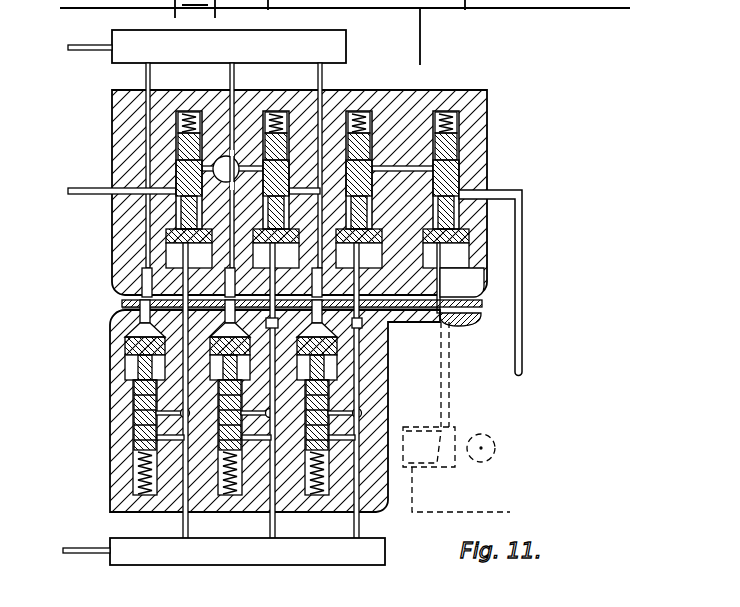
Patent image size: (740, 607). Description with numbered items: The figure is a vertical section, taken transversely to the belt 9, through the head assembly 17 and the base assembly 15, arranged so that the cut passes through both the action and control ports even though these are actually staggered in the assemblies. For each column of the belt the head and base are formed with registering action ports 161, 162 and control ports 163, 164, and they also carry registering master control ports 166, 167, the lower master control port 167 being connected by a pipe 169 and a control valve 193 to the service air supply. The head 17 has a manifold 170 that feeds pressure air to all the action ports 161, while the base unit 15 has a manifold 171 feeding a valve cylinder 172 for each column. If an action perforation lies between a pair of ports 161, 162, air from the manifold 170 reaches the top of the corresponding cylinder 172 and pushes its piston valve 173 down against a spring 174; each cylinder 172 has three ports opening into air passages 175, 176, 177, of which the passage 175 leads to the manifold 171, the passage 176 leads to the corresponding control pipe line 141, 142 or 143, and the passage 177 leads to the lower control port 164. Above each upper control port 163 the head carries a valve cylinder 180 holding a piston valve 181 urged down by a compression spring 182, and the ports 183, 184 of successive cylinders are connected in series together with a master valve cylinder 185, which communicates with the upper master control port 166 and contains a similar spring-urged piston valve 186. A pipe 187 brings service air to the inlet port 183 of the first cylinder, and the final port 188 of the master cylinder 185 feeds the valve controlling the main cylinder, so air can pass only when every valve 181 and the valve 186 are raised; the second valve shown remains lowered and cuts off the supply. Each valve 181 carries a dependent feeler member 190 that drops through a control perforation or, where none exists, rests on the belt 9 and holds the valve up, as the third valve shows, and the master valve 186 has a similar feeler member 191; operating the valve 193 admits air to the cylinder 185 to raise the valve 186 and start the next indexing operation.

The belt 9 is at (470, 302).
The base assembly 15 is at (113, 463).
The head assembly 17 is at (130, 235).
The control pipe line 141 is at (143, 432).
The control pipe line 142 is at (266, 513).
The control pipe line 143 is at (397, 310).
The action port 161 is at (140, 280).
The action port 162 is at (130, 330).
The control port 163 is at (143, 315).
The control port 164 is at (188, 323).
The master control port 166 is at (450, 280).
The master control port 167 is at (483, 322).
The pipe 169 is at (452, 343).
The manifold 170 is at (138, 49).
The manifold 171 is at (373, 552).
The valve cylinder 172 is at (130, 513).
The piston valve 173 is at (143, 408).
The spring 174 is at (147, 500).
The air passage 175 is at (177, 515).
The air passage 176 is at (140, 465).
The air passage 177 is at (137, 372).
The valve cylinder 180 is at (188, 112).
The piston valve 181 is at (140, 210).
The compression spring 182 is at (182, 118).
The port 183 is at (128, 192).
The port 184 is at (205, 162).
The master valve cylinder 185 is at (436, 140).
The piston valve 186 is at (450, 187).
The pipe 187 is at (70, 190).
The port 188 is at (470, 200).
The feeler member 190 is at (160, 296).
The feeler member 191 is at (448, 252).
The control valve 193 is at (457, 428).